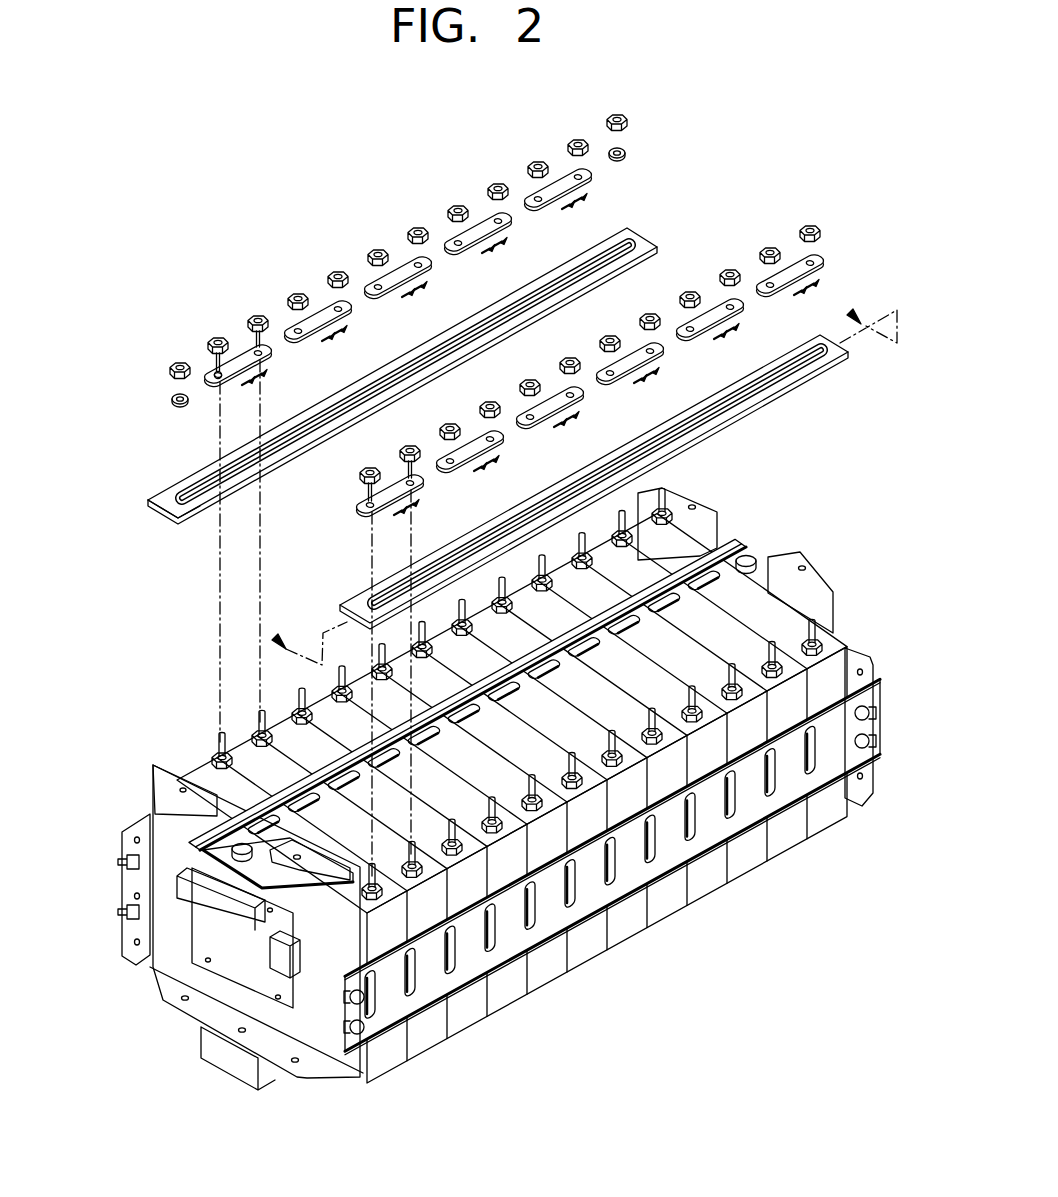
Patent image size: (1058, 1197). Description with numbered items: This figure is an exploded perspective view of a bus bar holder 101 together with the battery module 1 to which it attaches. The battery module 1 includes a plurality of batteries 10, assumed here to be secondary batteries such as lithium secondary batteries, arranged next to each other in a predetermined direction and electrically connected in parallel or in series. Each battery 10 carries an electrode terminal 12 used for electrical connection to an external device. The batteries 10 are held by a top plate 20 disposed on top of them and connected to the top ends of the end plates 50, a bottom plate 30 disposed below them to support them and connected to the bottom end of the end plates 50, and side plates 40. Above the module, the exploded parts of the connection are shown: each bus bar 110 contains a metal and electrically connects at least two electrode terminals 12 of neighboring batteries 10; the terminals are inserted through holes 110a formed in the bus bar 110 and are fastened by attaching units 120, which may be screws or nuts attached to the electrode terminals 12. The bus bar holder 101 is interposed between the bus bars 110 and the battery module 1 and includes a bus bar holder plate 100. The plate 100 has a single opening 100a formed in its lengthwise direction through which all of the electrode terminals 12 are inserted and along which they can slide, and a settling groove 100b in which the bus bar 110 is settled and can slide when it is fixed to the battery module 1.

The battery module 1 is at (800, 515).
The battery 10 is at (500, 988).
The electrode terminal 12 is at (220, 745).
The top plate 20 is at (138, 890).
The bottom plate 30 is at (217, 1038).
The side plate 40 is at (433, 982).
The end plate 50 is at (205, 985).
The bus bar holder plate 100 is at (173, 522).
The opening 100a is at (192, 490).
The settling groove 100b is at (170, 494).
The bus bar holder 101 is at (676, 163).
The bus bar 110 is at (248, 358).
The hole 110a is at (214, 373).
The attaching unit 120 is at (216, 343).